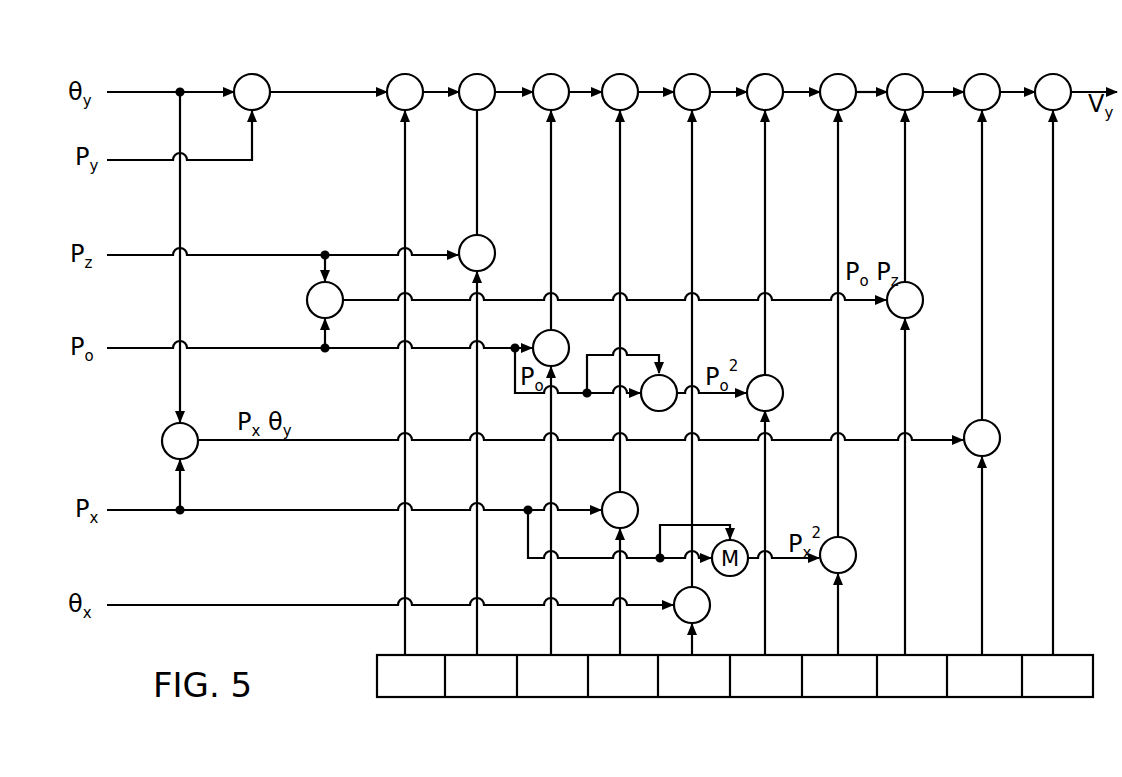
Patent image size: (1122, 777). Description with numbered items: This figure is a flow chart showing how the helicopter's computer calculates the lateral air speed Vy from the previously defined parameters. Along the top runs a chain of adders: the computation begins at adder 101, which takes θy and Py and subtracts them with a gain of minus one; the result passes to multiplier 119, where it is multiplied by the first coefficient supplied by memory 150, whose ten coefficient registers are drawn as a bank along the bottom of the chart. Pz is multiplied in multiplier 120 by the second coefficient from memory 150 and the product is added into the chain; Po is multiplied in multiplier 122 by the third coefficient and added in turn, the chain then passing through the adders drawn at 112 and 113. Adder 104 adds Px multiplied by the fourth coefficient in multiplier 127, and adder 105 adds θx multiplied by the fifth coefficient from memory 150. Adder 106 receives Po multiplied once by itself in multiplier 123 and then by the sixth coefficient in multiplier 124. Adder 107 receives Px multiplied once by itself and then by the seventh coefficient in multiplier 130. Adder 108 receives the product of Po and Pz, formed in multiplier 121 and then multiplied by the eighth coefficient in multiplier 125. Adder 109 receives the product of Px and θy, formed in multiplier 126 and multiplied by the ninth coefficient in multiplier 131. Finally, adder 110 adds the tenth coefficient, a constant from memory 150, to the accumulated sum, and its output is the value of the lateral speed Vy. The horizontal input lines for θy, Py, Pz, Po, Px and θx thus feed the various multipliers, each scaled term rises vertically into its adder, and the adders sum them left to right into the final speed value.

The adder 101 is at (264, 78).
The multiplier 119 is at (413, 76).
The adder 112 is at (485, 76).
The adder 113 is at (559, 76).
The adder 104 is at (628, 76).
The adder 105 is at (706, 80).
The adder 106 is at (778, 80).
The adder 107 is at (844, 75).
The adder 108 is at (911, 75).
The adder 109 is at (988, 75).
The adder 110 is at (1056, 74).
The multiplier 120 is at (494, 248).
The multiplier 121 is at (337, 287).
The multiplier 122 is at (569, 350).
The multiplier 123 is at (671, 406).
The multiplier 124 is at (782, 388).
The multiplier 125 is at (923, 302).
The multiplier 126 is at (196, 432).
The multiplier 127 is at (637, 505).
The multiplier 130 is at (856, 552).
The multiplier 131 is at (999, 432).
The memory 150 is at (375, 677).